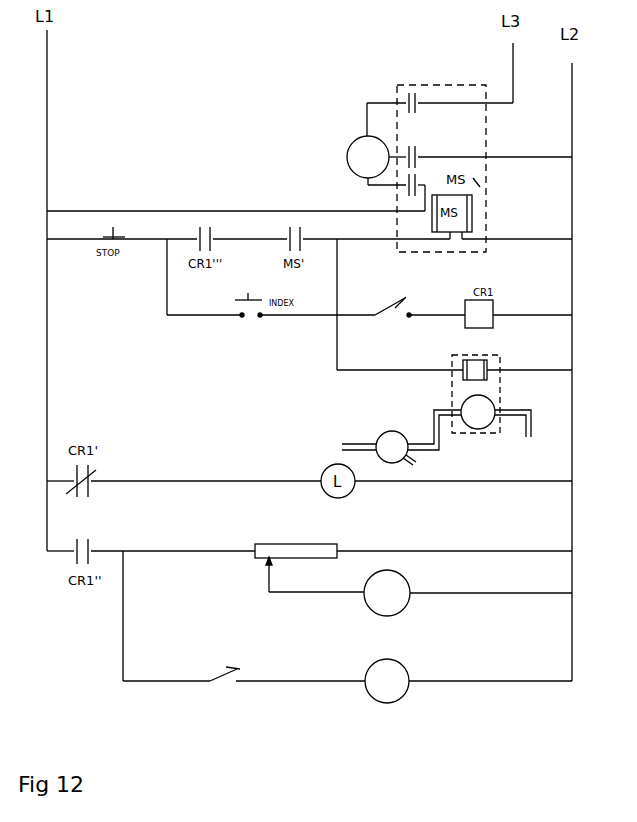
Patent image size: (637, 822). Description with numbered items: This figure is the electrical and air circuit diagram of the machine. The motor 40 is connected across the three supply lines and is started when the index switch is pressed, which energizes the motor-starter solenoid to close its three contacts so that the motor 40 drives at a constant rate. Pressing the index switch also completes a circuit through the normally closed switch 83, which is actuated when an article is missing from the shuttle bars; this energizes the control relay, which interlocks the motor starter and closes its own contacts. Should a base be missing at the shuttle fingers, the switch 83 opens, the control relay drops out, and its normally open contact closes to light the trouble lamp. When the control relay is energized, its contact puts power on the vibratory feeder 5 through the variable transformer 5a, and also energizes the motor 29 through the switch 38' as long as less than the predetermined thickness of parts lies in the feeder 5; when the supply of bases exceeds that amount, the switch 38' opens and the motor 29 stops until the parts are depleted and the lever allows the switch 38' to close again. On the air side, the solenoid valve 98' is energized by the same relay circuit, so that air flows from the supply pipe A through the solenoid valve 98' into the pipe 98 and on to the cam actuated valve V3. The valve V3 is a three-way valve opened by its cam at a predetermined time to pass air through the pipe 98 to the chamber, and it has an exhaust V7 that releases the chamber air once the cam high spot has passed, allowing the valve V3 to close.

The motor 40 is at (352, 172).
The normally closed switch 83 is at (390, 320).
The pipe 98 is at (401, 414).
The solenoid valve 98' is at (509, 403).
The cam actuated valve V3 is at (393, 431).
The exhaust V7 is at (418, 462).
The supply pipe A is at (535, 420).
The variable transformer 5a is at (281, 544).
The vibratory feeder 5 is at (410, 603).
The switch 38' is at (219, 657).
The motor 29 is at (403, 697).